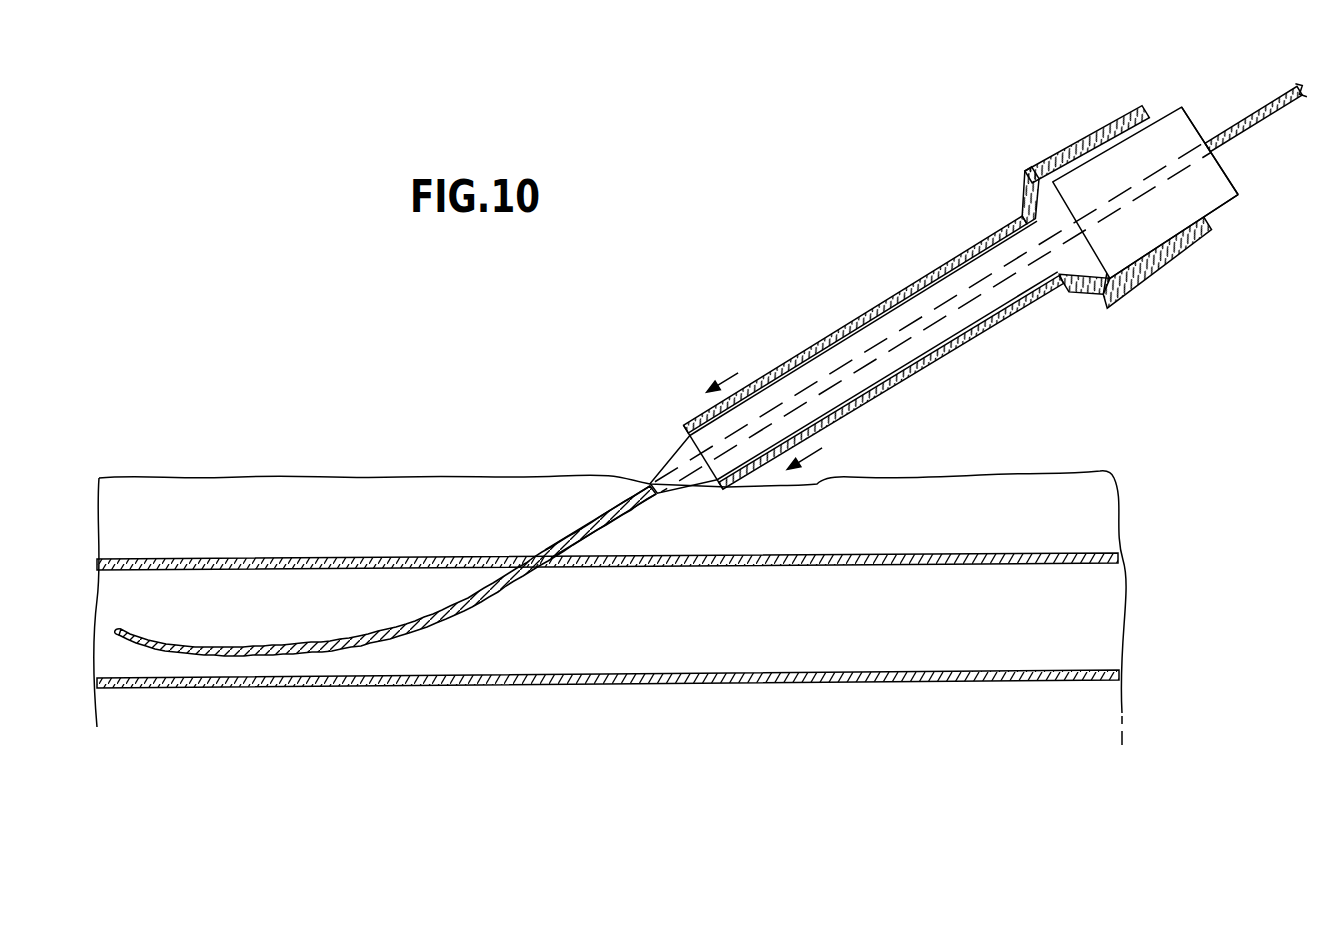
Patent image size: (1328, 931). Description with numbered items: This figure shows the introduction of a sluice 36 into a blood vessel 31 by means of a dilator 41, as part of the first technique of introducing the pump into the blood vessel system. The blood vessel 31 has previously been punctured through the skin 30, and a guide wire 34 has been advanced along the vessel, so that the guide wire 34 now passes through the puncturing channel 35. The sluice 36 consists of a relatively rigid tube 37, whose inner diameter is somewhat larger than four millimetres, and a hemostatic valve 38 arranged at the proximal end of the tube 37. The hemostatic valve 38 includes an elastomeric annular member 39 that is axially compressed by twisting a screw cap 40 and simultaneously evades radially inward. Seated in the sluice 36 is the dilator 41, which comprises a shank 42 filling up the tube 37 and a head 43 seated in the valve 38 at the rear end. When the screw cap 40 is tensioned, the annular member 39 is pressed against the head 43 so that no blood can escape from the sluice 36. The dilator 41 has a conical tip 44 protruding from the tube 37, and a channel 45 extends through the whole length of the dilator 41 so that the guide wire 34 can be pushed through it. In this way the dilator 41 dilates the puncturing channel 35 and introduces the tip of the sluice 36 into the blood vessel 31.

The skin 30 is at (485, 495).
The blood vessel 31 is at (326, 557).
The guide wire 34 is at (460, 613).
The puncturing channel 35 is at (597, 520).
The sluice 36 is at (877, 350).
The tube 37 is at (860, 323).
The hemostatic valve 38 is at (1083, 162).
The elastomeric annular member 39 is at (1174, 237).
The screw cap 40 is at (1137, 257).
The dilator 41 is at (1145, 191).
The shank 42 is at (890, 381).
The head 43 is at (1210, 151).
The conical tip 44 is at (679, 472).
The channel 45 is at (960, 228).